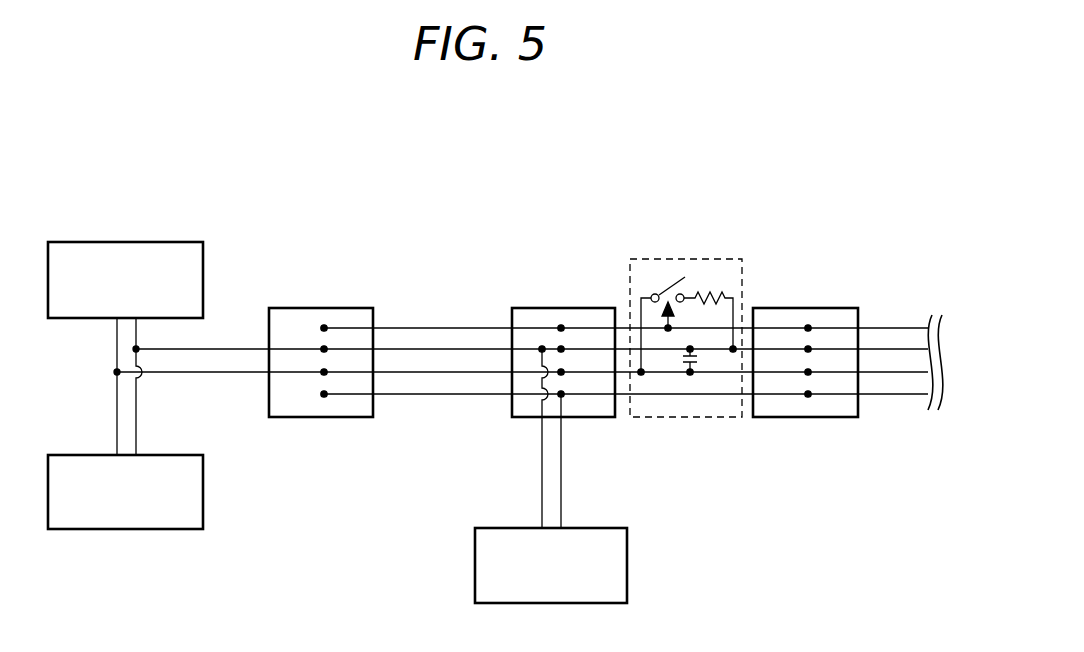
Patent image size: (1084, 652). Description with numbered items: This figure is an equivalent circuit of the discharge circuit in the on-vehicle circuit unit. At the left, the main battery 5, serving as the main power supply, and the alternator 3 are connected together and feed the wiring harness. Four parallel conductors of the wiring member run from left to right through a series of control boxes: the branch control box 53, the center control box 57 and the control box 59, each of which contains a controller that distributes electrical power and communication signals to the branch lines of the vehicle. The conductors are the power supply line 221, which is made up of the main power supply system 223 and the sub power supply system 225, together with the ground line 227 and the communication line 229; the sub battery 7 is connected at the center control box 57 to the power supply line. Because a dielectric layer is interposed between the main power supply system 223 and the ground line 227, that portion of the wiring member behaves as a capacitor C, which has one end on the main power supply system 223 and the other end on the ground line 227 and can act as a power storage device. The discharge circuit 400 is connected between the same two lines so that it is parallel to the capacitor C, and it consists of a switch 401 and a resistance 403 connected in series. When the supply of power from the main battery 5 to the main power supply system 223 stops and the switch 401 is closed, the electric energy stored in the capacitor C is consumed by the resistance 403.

The main battery 5 is at (177, 242).
The alternator 3 is at (177, 455).
The branch control box 53 is at (347, 308).
The center control box 57 is at (585, 308).
The control box 59 is at (828, 308).
The sub battery 7 is at (606, 528).
The power supply line 221 is at (475, 498).
The main power supply system 223 is at (392, 372).
The sub power supply system 225 is at (440, 394).
The ground line 227 is at (440, 349).
The communication line 229 is at (480, 328).
The discharge circuit 400 is at (694, 354).
The switch 401 is at (658, 275).
The resistance 403 is at (722, 296).
The capacitor C is at (693, 374).